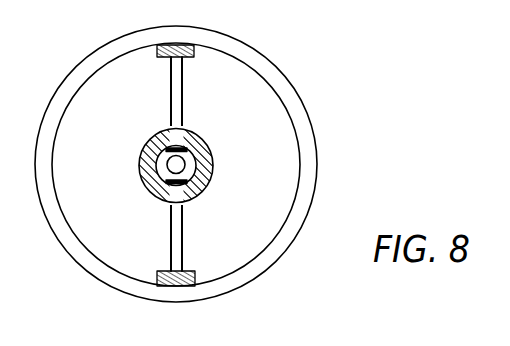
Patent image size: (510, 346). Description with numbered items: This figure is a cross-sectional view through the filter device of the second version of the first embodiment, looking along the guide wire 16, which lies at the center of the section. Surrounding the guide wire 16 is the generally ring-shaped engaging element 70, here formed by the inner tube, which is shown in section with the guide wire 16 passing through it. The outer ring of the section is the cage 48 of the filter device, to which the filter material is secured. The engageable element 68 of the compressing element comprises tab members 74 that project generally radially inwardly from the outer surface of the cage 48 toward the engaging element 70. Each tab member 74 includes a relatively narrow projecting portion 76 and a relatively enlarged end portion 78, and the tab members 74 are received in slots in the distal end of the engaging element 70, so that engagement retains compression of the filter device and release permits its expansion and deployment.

The guide wire 16 is at (185, 164).
The cage 48 is at (295, 218).
The engageable element 68 is at (200, 68).
The engaging element 70 is at (146, 167).
The tab member 74 is at (178, 97).
The projecting portion 76 is at (171, 115).
The end portion 78 is at (187, 150).